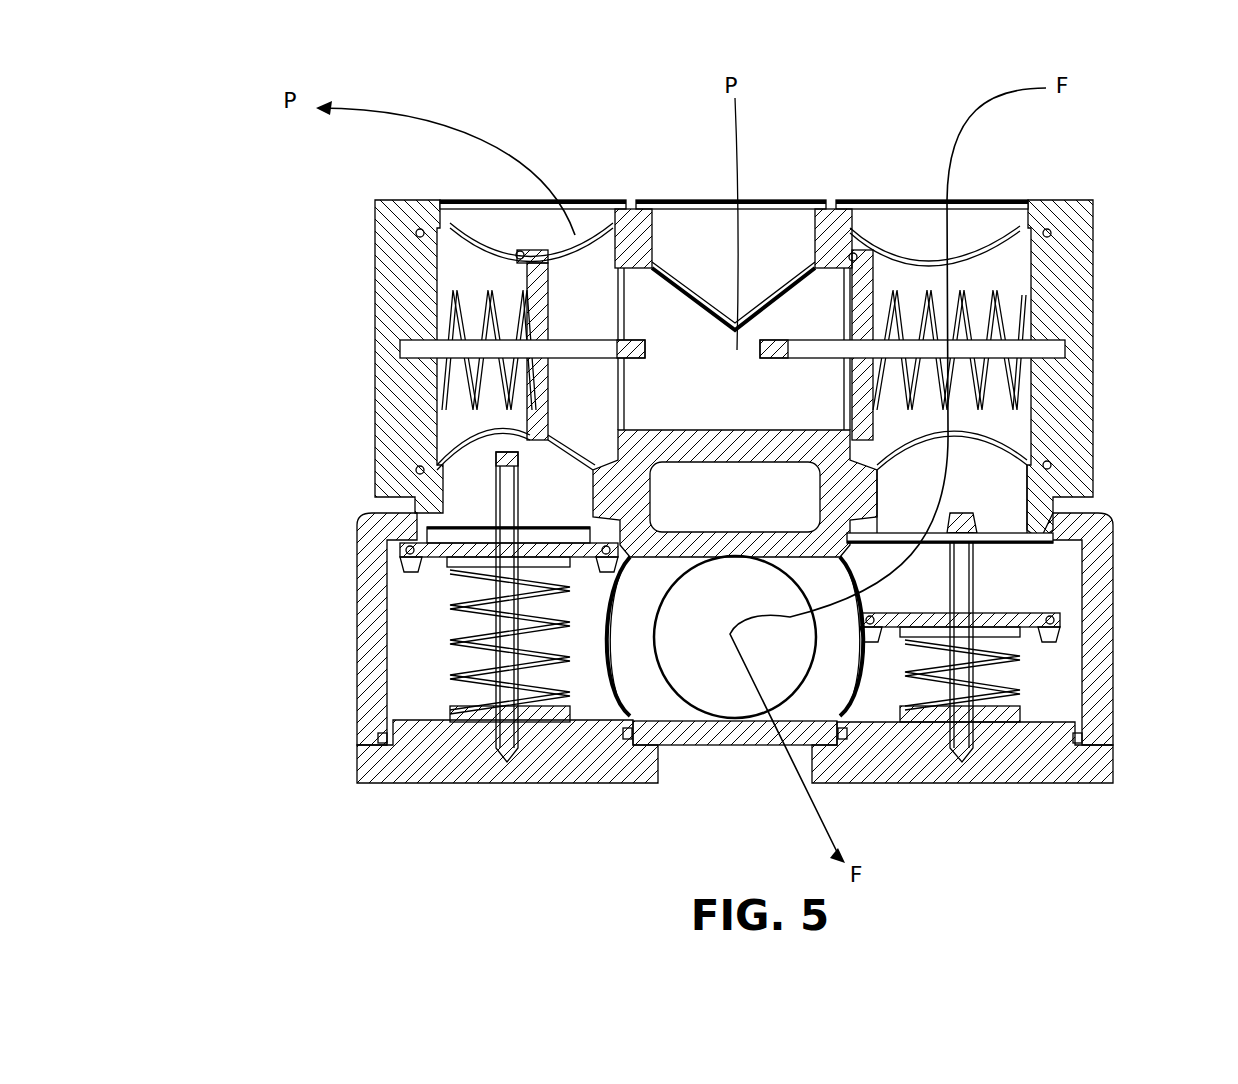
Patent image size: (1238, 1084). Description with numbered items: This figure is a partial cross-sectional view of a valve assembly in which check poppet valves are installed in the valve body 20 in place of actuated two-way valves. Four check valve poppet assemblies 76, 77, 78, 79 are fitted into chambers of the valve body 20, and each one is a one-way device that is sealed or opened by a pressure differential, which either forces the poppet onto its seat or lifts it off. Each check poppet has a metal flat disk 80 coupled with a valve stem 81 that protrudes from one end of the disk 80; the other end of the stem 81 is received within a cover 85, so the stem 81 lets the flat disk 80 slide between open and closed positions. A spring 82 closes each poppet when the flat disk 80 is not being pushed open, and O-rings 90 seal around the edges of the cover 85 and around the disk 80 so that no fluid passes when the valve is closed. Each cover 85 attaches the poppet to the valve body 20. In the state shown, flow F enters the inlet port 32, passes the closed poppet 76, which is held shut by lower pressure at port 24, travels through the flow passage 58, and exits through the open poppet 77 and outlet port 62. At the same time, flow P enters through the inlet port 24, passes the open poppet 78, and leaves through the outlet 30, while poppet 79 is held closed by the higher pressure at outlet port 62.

The valve body 20 is at (575, 235).
The inlet port 24 is at (712, 200).
The outlet port 30 is at (592, 200).
The inlet port 32 is at (920, 200).
The flow passage 58 is at (987, 507).
The outlet port 62 is at (735, 745).
The check valve poppet assembly 76 is at (1012, 262).
The check valve poppet assembly 77 is at (1058, 685).
The check valve poppet assembly 78 is at (470, 272).
The check valve poppet assembly 79 is at (402, 682).
The flat disk 80 is at (440, 543).
The valve stem 81 is at (458, 656).
The spring 82 is at (460, 600).
The cover 85 is at (655, 785).
The O-rings 90 is at (600, 552).